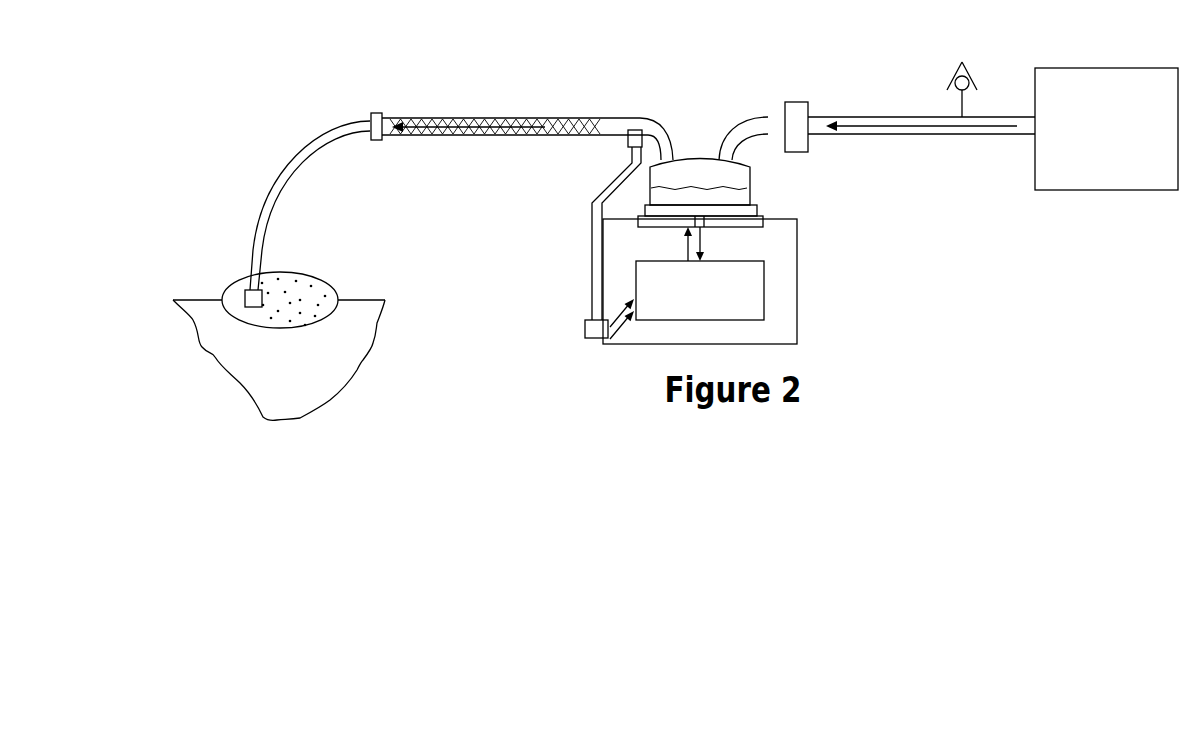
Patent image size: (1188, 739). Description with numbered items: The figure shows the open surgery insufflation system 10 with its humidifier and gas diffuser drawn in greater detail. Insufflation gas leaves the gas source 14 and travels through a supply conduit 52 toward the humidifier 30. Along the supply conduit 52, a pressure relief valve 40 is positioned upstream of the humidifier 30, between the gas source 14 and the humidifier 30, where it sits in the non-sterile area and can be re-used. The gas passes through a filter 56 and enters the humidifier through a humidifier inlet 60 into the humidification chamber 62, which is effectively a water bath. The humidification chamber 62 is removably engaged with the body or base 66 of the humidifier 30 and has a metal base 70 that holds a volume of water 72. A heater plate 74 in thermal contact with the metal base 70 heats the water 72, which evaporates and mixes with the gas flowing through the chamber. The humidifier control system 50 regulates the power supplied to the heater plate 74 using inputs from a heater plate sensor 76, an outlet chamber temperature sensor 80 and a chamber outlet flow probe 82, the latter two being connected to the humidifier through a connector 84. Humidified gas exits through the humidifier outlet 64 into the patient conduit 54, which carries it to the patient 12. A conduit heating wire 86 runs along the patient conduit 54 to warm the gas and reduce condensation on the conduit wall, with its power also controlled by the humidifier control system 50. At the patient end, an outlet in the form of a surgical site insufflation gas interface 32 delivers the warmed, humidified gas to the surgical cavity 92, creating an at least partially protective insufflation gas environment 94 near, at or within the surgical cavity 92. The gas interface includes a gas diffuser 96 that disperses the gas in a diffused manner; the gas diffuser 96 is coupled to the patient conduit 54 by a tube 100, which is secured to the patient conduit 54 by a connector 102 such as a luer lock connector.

The open surgery insufflation system 10 is at (628, 77).
The patient 12 is at (364, 345).
The gas source 14 is at (1106, 129).
The humidifier 30 is at (826, 347).
The surgical site insufflation gas interface 32 is at (246, 181).
The pressure relief valve 40 is at (968, 79).
The humidifier control system 50 is at (700, 290).
The supply conduit 52 is at (870, 116).
The patient conduit 54 is at (508, 117).
The filter 56 is at (800, 104).
The humidifier inlet 60 is at (729, 152).
The humidification chamber 62 is at (742, 176).
The humidifier outlet 64 is at (673, 152).
The base 66 is at (788, 289).
The metal base 70 is at (758, 215).
The water 72 is at (752, 196).
The heater plate 74 is at (758, 227).
The heater plate sensor 76 is at (706, 228).
The outlet chamber temperature sensor 80 is at (627, 140).
The chamber outlet flow probe 82 is at (622, 158).
The connector 84 is at (594, 332).
The conduit heating wire 86 is at (540, 135).
The surgical cavity 92 is at (308, 321).
The insufflation gas environment 94 is at (304, 289).
The gas diffuser 96 is at (241, 298).
The tube 100 is at (301, 143).
The connector 102 is at (374, 113).